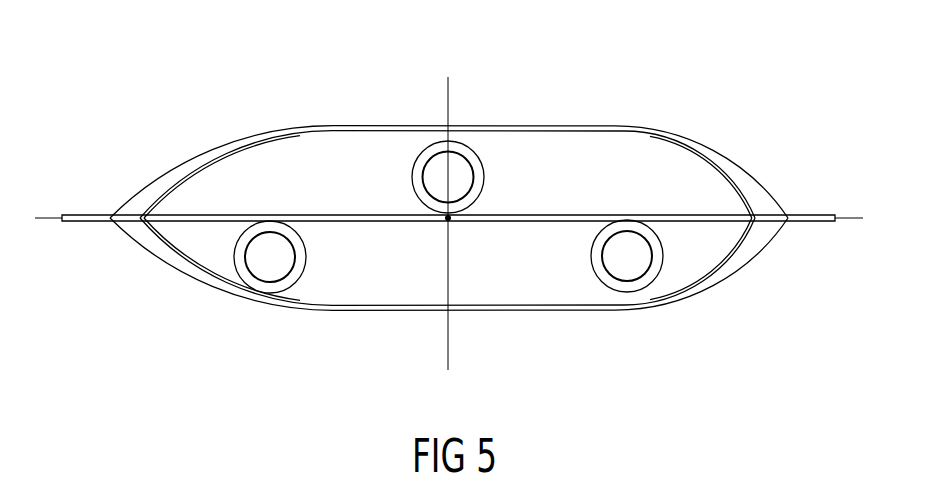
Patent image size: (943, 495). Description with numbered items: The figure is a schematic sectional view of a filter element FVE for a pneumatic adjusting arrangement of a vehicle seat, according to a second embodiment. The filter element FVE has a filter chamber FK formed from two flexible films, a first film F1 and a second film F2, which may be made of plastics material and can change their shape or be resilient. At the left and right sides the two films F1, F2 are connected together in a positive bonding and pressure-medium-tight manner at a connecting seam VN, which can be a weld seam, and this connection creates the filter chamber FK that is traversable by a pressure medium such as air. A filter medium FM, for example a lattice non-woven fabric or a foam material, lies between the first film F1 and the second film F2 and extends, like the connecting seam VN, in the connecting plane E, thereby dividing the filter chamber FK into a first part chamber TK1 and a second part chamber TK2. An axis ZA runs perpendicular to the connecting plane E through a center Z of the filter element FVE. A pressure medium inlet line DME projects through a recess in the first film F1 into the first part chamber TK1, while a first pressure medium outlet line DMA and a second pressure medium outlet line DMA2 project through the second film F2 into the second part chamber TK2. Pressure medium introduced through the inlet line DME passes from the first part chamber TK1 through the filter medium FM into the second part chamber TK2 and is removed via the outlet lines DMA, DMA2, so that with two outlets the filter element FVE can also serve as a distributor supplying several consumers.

The filter element FVE is at (733, 98).
The filter chamber FK is at (298, 122).
The first film F1 is at (748, 178).
The second film F2 is at (713, 277).
The first part chamber TK1 is at (617, 148).
The second part chamber TK2 is at (513, 283).
The pressure medium inlet line DME is at (476, 143).
The first pressure medium outlet line DMA is at (295, 288).
The second pressure medium outlet line DMA2 is at (613, 288).
The filter medium FM is at (423, 221).
The connecting seam VN is at (98, 213).
The connecting plane E is at (459, 216).
The axis ZA is at (450, 240).
The center Z is at (450, 220).